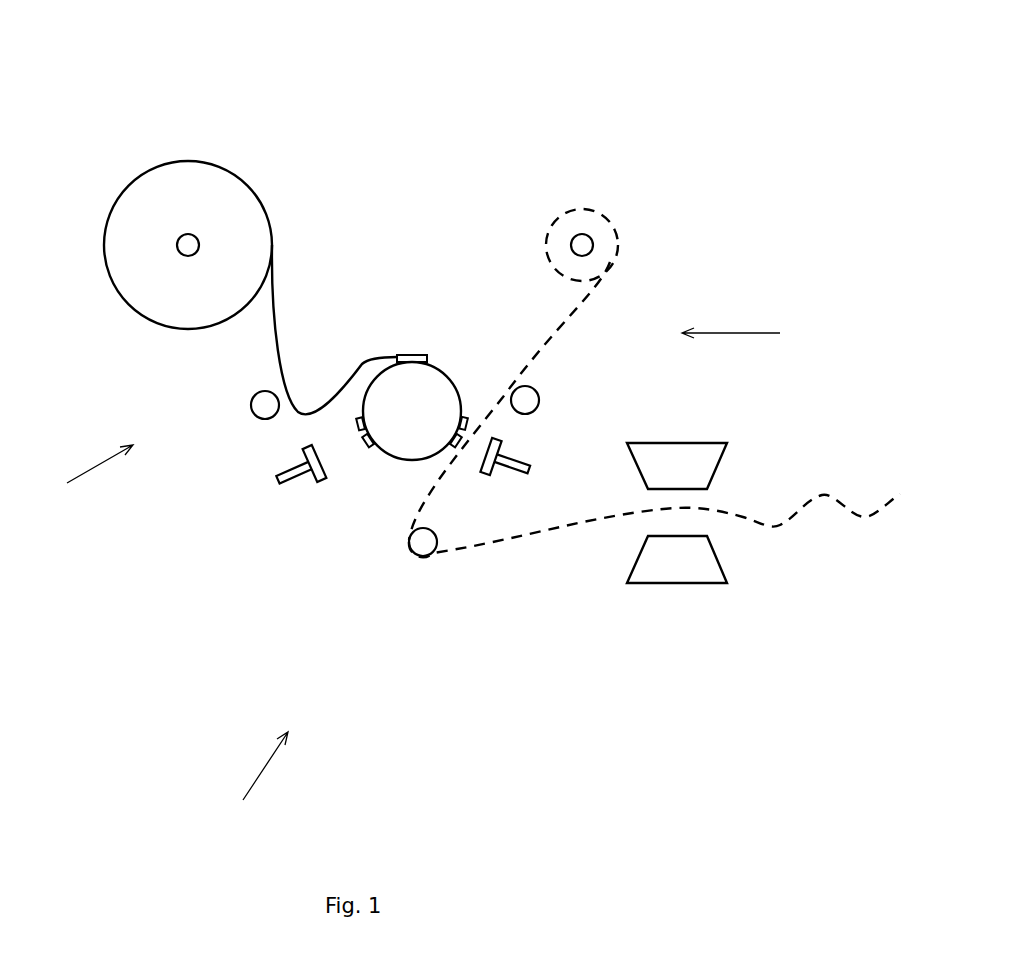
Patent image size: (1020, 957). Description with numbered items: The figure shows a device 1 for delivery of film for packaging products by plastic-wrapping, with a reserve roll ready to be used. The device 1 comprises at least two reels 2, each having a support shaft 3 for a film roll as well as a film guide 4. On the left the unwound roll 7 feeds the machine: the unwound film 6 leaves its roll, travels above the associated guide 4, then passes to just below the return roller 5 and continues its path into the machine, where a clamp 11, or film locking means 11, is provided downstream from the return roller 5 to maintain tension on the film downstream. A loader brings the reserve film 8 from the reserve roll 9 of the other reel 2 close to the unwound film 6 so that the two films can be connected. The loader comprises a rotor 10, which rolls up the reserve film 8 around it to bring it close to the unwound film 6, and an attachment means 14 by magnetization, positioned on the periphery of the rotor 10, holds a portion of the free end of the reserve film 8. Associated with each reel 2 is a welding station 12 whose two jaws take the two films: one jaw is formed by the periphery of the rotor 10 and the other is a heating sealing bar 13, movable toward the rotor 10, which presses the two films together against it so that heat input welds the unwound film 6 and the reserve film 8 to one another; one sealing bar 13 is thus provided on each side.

The device 1 is at (259, 783).
The reel 2 is at (426, 411).
The support shaft 3 is at (195, 202).
The film guide 4 is at (263, 414).
The return roller 5 is at (424, 561).
The unwound film 6 is at (569, 556).
The unwound roll 7 is at (583, 186).
The reserve film 8 is at (278, 307).
The reserve roll 9 is at (118, 141).
The rotor 10 is at (384, 453).
The clamp 11 is at (681, 606).
The welding station 12 is at (333, 427).
The sealing bar 13 is at (295, 498).
The attachment means 14 is at (420, 337).